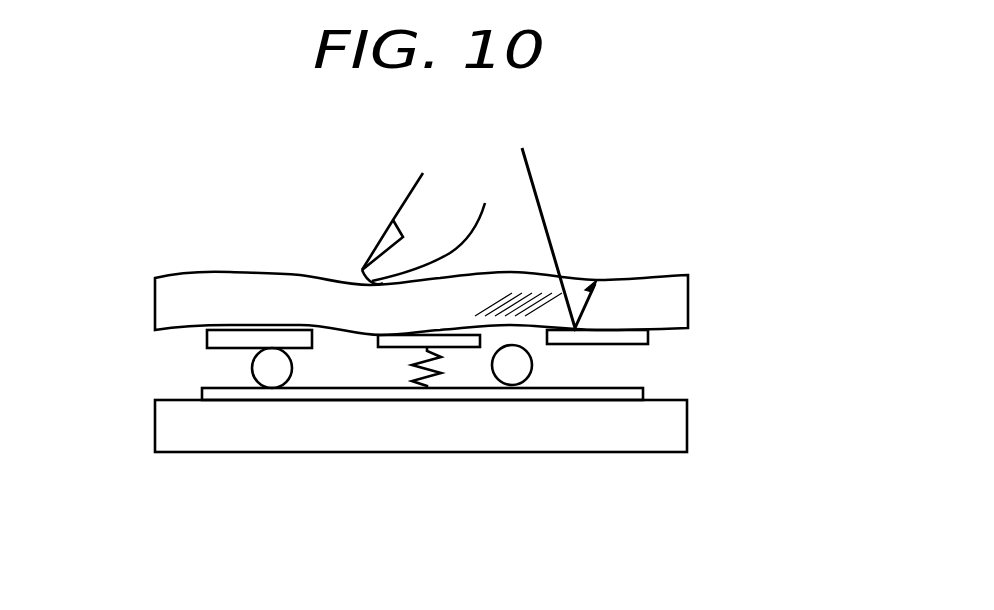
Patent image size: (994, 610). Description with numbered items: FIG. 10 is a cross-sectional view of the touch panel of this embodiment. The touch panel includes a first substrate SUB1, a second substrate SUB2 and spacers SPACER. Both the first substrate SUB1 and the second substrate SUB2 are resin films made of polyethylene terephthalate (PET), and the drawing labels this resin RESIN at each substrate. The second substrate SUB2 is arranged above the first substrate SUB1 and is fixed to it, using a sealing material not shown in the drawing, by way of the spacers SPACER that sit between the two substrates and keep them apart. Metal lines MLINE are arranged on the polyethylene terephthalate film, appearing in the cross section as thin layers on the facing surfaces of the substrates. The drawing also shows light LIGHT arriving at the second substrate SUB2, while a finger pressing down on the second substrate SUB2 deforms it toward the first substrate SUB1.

The second substrate SUB2 is at (173, 303).
The first substrate SUB1 is at (173, 428).
The resin substrate material RESIN is at (438, 357).
The metal lines MLINE is at (655, 344).
The spacers SPACER is at (272, 377).
The incident light LIGHT is at (531, 176).